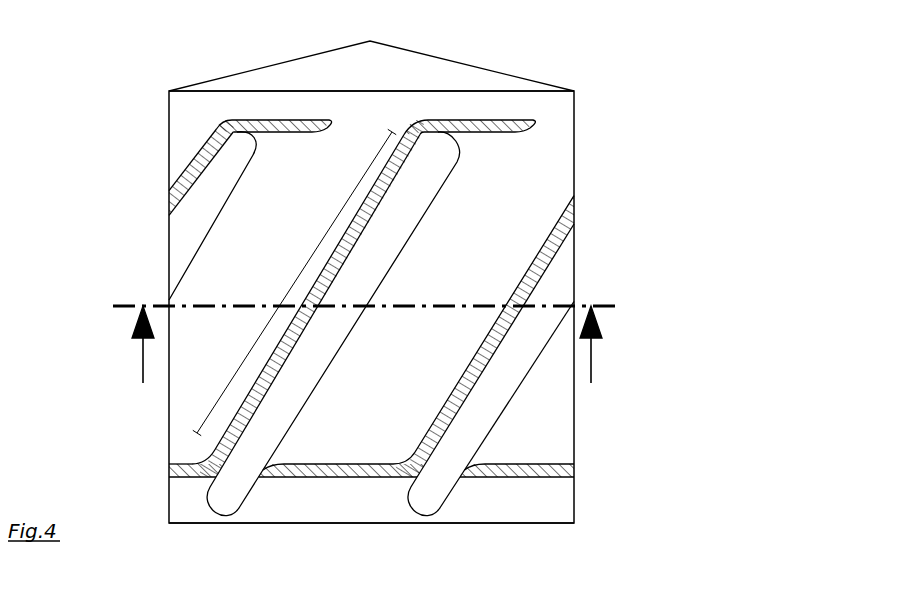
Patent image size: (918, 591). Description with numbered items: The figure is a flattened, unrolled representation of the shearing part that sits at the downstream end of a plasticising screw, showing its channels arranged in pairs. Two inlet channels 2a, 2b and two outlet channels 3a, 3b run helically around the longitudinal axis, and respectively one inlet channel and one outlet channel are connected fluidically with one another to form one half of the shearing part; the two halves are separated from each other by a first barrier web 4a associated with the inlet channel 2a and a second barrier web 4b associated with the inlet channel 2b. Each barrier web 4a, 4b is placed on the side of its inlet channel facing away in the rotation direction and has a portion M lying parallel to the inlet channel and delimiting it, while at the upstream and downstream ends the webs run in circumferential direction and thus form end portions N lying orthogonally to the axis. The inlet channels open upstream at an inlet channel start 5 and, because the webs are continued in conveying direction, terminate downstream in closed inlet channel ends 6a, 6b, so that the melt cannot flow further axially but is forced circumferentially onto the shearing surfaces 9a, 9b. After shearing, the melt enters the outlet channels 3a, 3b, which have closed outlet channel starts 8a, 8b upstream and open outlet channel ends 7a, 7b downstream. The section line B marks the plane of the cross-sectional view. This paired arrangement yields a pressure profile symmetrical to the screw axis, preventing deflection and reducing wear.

The inlet channel 2a is at (277, 417).
The inlet channel 2b is at (199, 202).
The outlet channel 3a is at (398, 417).
The outlet channel 3b is at (190, 383).
The first barrier web 4a is at (322, 287).
The second barrier web 4b is at (553, 268).
The inlet channel start 5 is at (232, 495).
The inlet channel end 6a is at (443, 138).
The inlet channel end 6b is at (234, 140).
The outlet channel end 7a is at (553, 124).
The outlet channel end 7b is at (357, 127).
The outlet channel start 8a is at (400, 448).
The outlet channel start 8b is at (543, 455).
The shearing surface 9a is at (479, 237).
The shearing surface 9b is at (278, 222).
The portion of barrier web M is at (327, 243).
The end portions of barrier web N is at (272, 121).
The section line B is at (367, 357).